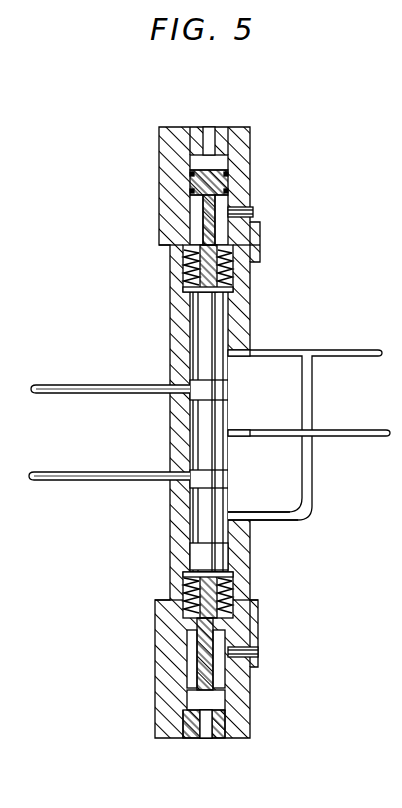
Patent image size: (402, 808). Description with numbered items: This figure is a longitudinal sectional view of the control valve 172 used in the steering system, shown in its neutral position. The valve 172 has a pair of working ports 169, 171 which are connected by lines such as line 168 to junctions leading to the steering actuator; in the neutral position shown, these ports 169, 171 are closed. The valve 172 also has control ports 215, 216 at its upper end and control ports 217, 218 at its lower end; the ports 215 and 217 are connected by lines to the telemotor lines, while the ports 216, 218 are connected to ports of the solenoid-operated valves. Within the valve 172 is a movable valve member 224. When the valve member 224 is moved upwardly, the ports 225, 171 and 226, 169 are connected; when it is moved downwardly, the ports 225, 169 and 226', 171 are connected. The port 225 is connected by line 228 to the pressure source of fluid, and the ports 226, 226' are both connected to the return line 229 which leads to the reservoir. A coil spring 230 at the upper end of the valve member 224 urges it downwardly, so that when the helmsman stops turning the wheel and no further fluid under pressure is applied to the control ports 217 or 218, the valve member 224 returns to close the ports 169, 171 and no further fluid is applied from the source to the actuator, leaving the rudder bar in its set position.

The valve 172 is at (262, 183).
The port 171 is at (168, 396).
The control port 215 is at (216, 119).
The control port 216 is at (255, 216).
The control port 217 is at (205, 720).
The control port 218 is at (259, 652).
The valve member 224 is at (212, 437).
The port 225 is at (251, 441).
The port 226 is at (268, 532).
The port 226' is at (265, 373).
The line 228 is at (371, 424).
The return line 229 is at (357, 341).
The coil spring 230 is at (184, 271).
The line 168 is at (103, 370).
The port 169 is at (168, 484).